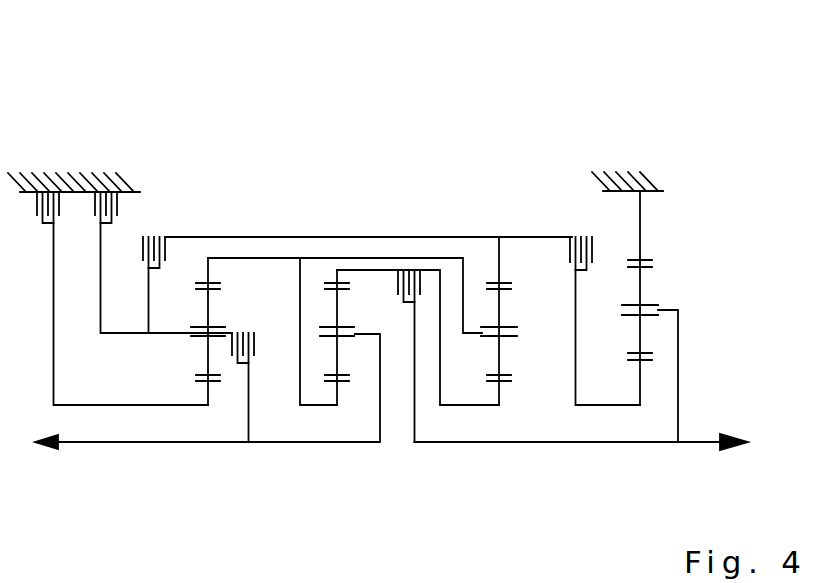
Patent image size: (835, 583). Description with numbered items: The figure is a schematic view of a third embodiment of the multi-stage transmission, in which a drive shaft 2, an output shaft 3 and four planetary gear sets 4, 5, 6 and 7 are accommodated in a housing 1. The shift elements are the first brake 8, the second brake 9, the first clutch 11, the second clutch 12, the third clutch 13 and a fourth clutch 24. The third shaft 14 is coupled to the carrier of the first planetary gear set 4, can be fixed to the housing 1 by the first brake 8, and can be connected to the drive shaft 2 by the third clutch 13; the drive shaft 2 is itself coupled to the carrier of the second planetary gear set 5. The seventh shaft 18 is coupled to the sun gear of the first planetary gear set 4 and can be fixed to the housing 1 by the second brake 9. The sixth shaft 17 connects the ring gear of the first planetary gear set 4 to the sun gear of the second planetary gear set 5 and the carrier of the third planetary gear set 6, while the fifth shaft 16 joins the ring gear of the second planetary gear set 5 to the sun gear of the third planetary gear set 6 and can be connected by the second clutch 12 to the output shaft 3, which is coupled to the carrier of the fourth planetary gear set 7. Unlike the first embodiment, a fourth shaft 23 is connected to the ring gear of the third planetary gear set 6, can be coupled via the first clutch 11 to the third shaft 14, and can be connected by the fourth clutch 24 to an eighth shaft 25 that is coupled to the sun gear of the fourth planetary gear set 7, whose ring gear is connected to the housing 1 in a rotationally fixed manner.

The housing 1 is at (108, 176).
The drive shaft 2 is at (150, 443).
The output shaft 3 is at (678, 347).
The first planetary gear set 4 is at (209, 152).
The second planetary gear set 5 is at (339, 152).
The third planetary gear set 6 is at (499, 152).
The fourth planetary gear set 7 is at (640, 152).
The first brake 8 is at (96, 192).
The second brake 9 is at (50, 196).
The first clutch 11 is at (154, 240).
The second clutch 12 is at (404, 280).
The third clutch 13 is at (245, 352).
The third shaft 14 is at (99, 313).
The fifth shaft 16 is at (473, 406).
The sixth shaft 17 is at (323, 406).
The seventh shaft 18 is at (52, 340).
The fourth shaft 23 is at (274, 237).
The fourth clutch 24 is at (575, 240).
The eighth shaft 25 is at (573, 355).